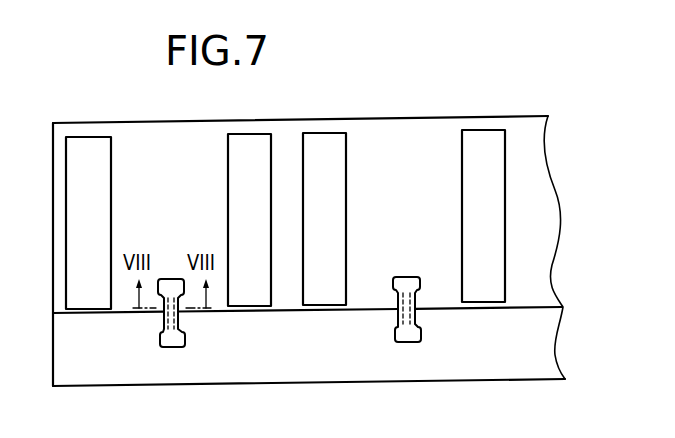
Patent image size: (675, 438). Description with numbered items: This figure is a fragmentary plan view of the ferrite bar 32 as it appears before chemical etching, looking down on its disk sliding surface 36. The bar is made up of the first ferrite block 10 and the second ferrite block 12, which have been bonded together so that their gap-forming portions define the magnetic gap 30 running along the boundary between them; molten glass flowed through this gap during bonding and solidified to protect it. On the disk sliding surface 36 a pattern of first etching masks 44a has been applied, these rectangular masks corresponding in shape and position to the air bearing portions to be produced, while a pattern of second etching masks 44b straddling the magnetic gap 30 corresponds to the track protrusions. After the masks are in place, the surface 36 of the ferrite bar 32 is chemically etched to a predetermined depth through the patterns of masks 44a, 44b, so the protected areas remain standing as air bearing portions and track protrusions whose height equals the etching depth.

The first ferrite block 10 is at (548, 193).
The second ferrite block 12 is at (545, 352).
The magnetic gap 30 is at (546, 290).
The ferrite bar 32 is at (454, 98).
The disk sliding surface 36 is at (180, 211).
The first etching masks 44a is at (86, 145).
The second etching masks 44b is at (405, 279).